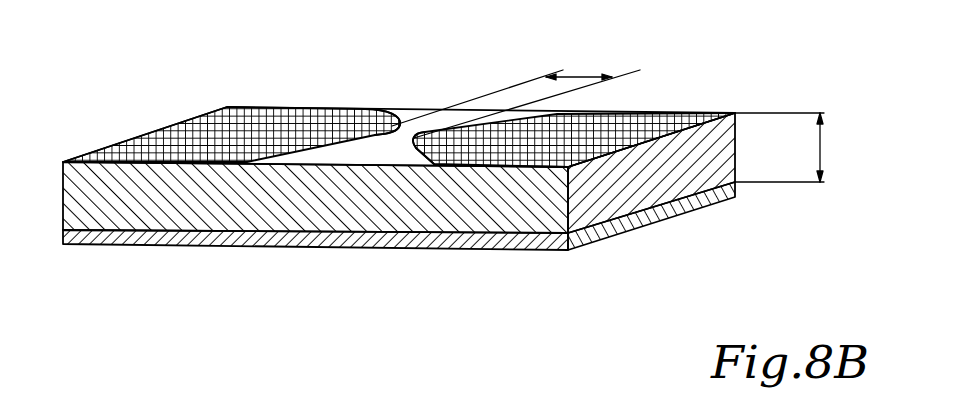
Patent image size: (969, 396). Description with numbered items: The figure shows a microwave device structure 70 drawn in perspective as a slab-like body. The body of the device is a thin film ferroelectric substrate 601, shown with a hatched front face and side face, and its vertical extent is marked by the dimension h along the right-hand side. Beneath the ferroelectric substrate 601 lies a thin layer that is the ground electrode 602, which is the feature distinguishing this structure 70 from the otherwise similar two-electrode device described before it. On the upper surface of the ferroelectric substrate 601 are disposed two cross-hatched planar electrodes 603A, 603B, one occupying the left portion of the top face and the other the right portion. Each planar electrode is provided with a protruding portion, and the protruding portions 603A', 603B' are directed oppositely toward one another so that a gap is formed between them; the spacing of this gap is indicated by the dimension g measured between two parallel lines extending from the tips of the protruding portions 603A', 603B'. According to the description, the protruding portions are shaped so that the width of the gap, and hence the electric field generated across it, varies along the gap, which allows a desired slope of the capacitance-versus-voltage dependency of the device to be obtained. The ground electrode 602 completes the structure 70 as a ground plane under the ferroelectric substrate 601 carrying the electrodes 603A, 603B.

The thin film ferroelectric substrate 601 is at (82, 186).
The ground electrode 602 is at (666, 217).
The planar electrode 603A is at (231, 85).
The protruding portion 603A' is at (450, 67).
The planar electrode 603B is at (595, 92).
The protruding portion 603B' is at (526, 87).
The gap width g is at (579, 58).
The substrate thickness h is at (792, 147).
The structure 70 is at (233, 292).